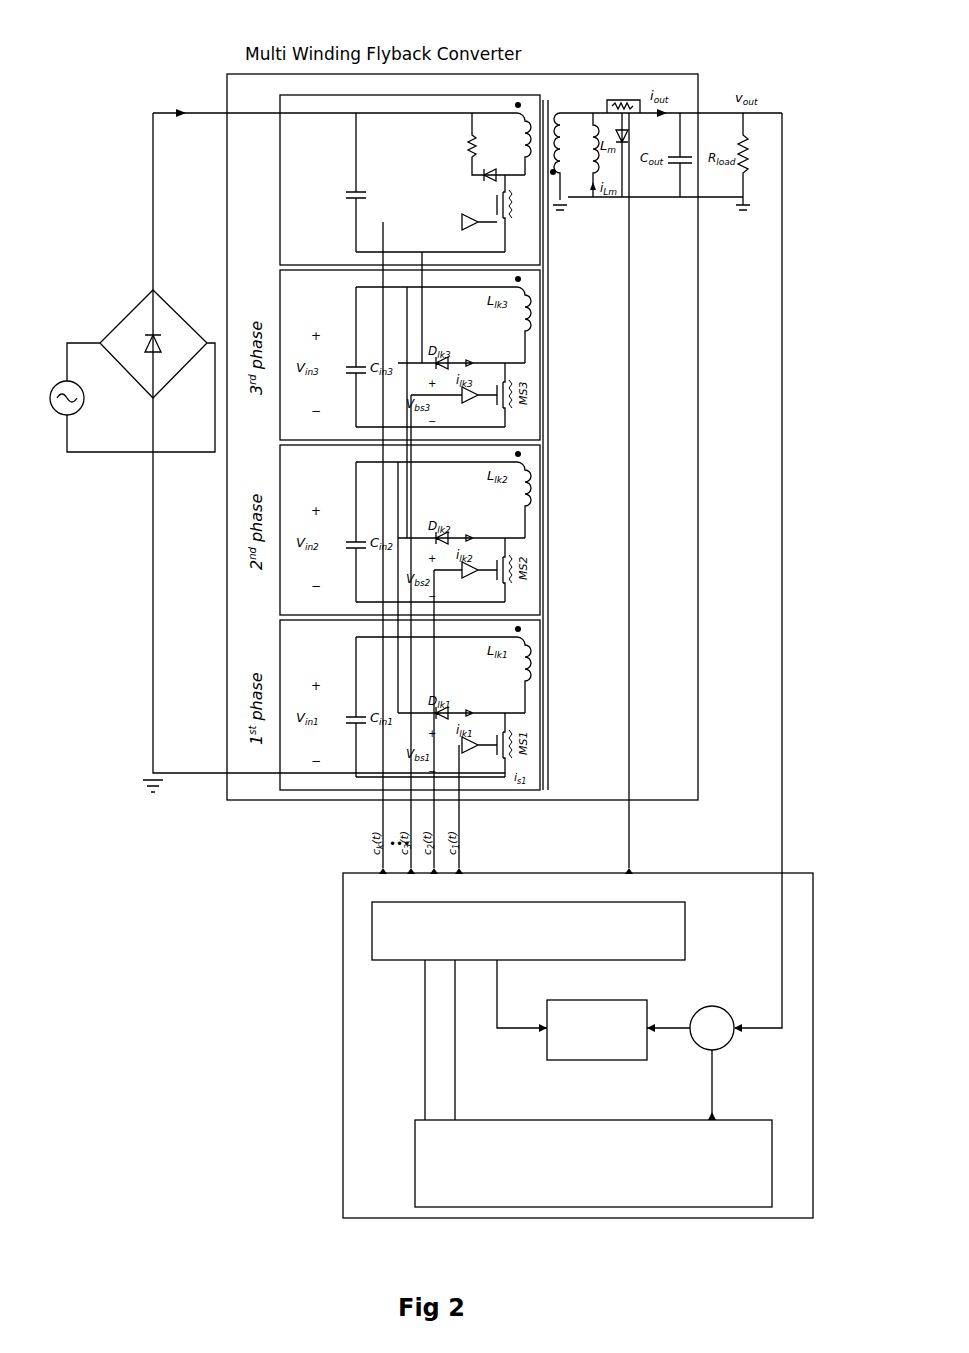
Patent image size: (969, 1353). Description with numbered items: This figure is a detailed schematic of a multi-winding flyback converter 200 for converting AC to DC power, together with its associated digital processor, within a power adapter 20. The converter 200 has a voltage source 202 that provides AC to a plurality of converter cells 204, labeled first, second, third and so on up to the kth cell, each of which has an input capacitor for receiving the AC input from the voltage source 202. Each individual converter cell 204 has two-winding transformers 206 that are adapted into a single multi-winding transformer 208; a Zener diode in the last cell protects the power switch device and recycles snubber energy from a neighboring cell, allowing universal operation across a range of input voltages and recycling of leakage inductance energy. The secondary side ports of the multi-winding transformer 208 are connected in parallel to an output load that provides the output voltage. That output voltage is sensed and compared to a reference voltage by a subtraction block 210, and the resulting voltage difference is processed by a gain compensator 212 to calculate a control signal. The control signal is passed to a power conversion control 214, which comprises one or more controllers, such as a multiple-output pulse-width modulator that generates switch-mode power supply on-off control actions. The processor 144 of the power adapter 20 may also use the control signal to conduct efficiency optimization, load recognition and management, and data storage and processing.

The multi-winding flyback converter 200 is at (273, 441).
The voltage source 202 is at (132, 371).
The converter cell 204 is at (487, 97).
The two-winding transformer 206 is at (522, 158).
The multi-winding transformer 208 is at (562, 113).
The subtraction block 210 is at (715, 1006).
The gain compensator 212 is at (585, 1062).
The power conversion control 214 is at (672, 905).
The processor 144 is at (593, 1163).
The power adapter 20 is at (578, 1056).